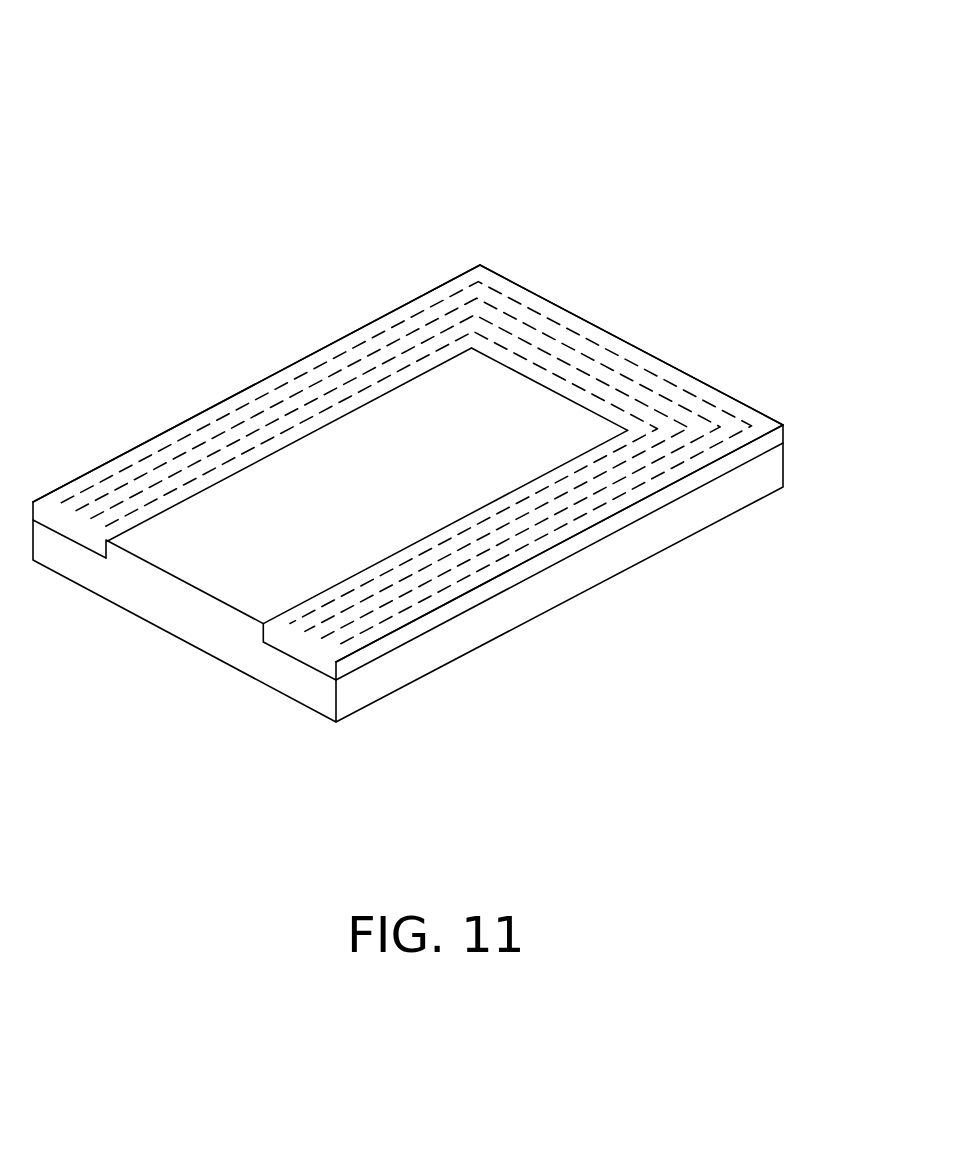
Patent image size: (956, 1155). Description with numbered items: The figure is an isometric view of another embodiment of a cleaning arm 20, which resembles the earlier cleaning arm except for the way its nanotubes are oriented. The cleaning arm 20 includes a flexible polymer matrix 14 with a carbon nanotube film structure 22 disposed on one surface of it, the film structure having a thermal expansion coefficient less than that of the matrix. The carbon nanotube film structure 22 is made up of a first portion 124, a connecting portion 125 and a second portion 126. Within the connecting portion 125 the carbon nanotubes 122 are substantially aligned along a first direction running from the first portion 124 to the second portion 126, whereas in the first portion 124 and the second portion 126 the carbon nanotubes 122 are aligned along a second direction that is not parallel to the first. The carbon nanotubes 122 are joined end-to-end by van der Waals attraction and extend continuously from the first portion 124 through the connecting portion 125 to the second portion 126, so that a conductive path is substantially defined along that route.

The cleaning arm 20 is at (453, 85).
The carbon nanotube film structure 22 is at (782, 438).
The flexible polymer matrix 14 is at (702, 508).
The carbon nanotubes 122 is at (462, 285).
The first portion 124 is at (200, 437).
The second portion 126 is at (457, 578).
The connecting portion 125 is at (615, 378).